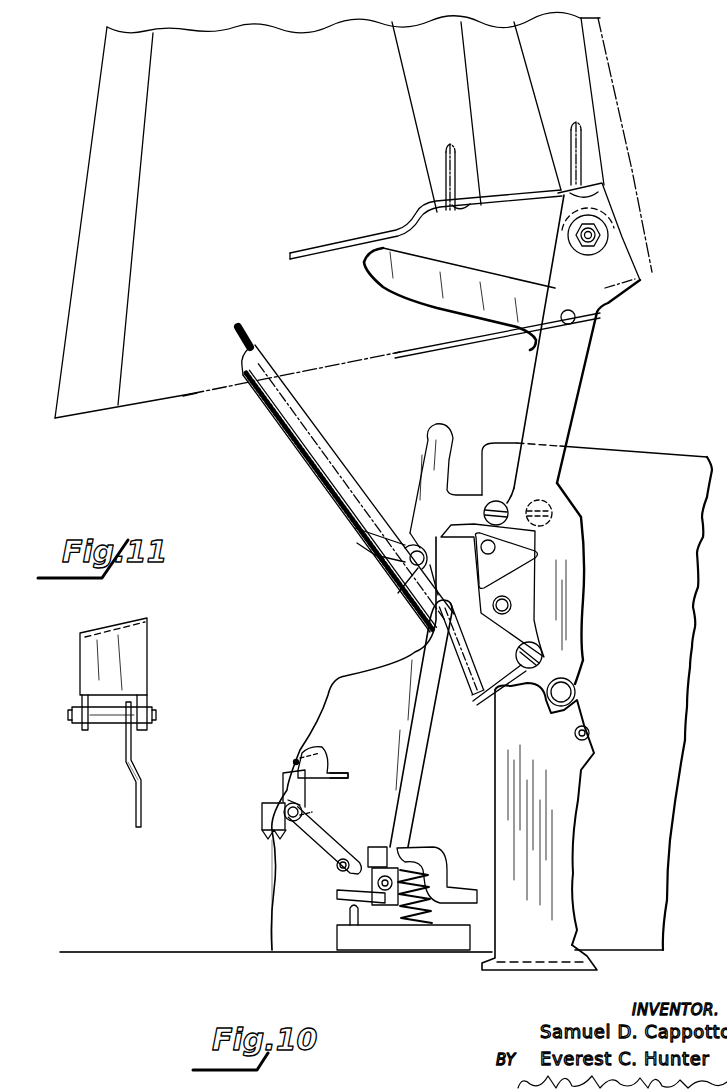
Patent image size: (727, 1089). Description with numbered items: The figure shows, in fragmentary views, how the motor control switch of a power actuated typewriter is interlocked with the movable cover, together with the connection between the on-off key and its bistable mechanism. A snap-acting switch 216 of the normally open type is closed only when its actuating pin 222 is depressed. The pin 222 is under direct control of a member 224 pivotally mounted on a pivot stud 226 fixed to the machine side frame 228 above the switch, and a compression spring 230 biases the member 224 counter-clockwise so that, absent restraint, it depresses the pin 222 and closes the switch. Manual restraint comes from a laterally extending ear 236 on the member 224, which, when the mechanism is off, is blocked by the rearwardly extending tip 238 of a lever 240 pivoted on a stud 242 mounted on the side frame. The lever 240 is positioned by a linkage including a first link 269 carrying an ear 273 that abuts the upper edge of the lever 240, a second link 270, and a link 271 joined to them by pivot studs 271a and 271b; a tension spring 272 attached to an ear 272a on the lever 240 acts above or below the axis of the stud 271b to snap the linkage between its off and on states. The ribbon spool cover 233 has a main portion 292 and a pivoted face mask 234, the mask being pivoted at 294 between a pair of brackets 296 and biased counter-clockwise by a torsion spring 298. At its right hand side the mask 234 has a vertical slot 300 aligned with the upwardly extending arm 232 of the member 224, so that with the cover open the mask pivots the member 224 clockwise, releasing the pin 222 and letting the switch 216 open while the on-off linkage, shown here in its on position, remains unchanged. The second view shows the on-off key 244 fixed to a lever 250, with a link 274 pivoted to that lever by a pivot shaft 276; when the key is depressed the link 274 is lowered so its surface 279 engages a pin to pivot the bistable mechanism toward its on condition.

In FIG. 10, the main portion 292 is at (94, 128).
In FIG. 10, the ribbon spool cover 233 is at (75, 252).
In FIG. 10, the machine side frame 228 is at (605, 454).
In FIG. 10, the brackets 296 is at (432, 495).
In FIG. 10, the face mask 234 is at (322, 488).
In FIG. 10, the torsion spring 298 is at (378, 566).
In FIG. 10, the pivot 294 is at (398, 587).
In FIG. 10, the vertical slot 300 is at (490, 668).
In FIG. 10, the upwardly extending arm 232 is at (418, 722).
In FIG. 10, the first link 269 is at (325, 764).
In FIG. 10, the pivot stud 271a is at (302, 754).
In FIG. 10, the ear 273 is at (345, 774).
In FIG. 10, the link 271 is at (290, 790).
In FIG. 10, the pivot stud 271b is at (304, 803).
In FIG. 10, the ear 272a is at (310, 813).
In FIG. 10, the second link 270 is at (265, 813).
In FIG. 10, the tension spring 272 is at (272, 832).
In FIG. 10, the lever 240 is at (314, 836).
In FIG. 10, the stud 242 is at (338, 872).
In FIG. 10, the tip 238 is at (352, 888).
In FIG. 10, the ear 236 is at (366, 851).
In FIG. 10, the member 224 is at (403, 857).
In FIG. 10, the pivot stud 226 is at (441, 862).
In FIG. 10, the compression spring 230 is at (432, 901).
In FIG. 10, the actuating pin 222 is at (403, 927).
In FIG. 10, the snap-acting switch 216 is at (400, 944).
In FIG. 11, the on-off key 244 is at (125, 612).
In FIG. 11, the lever 250 is at (149, 700).
In FIG. 11, the pivot shaft 276 is at (105, 728).
In FIG. 11, the link 274 is at (134, 753).
In FIG. 11, the surface 279 is at (128, 773).